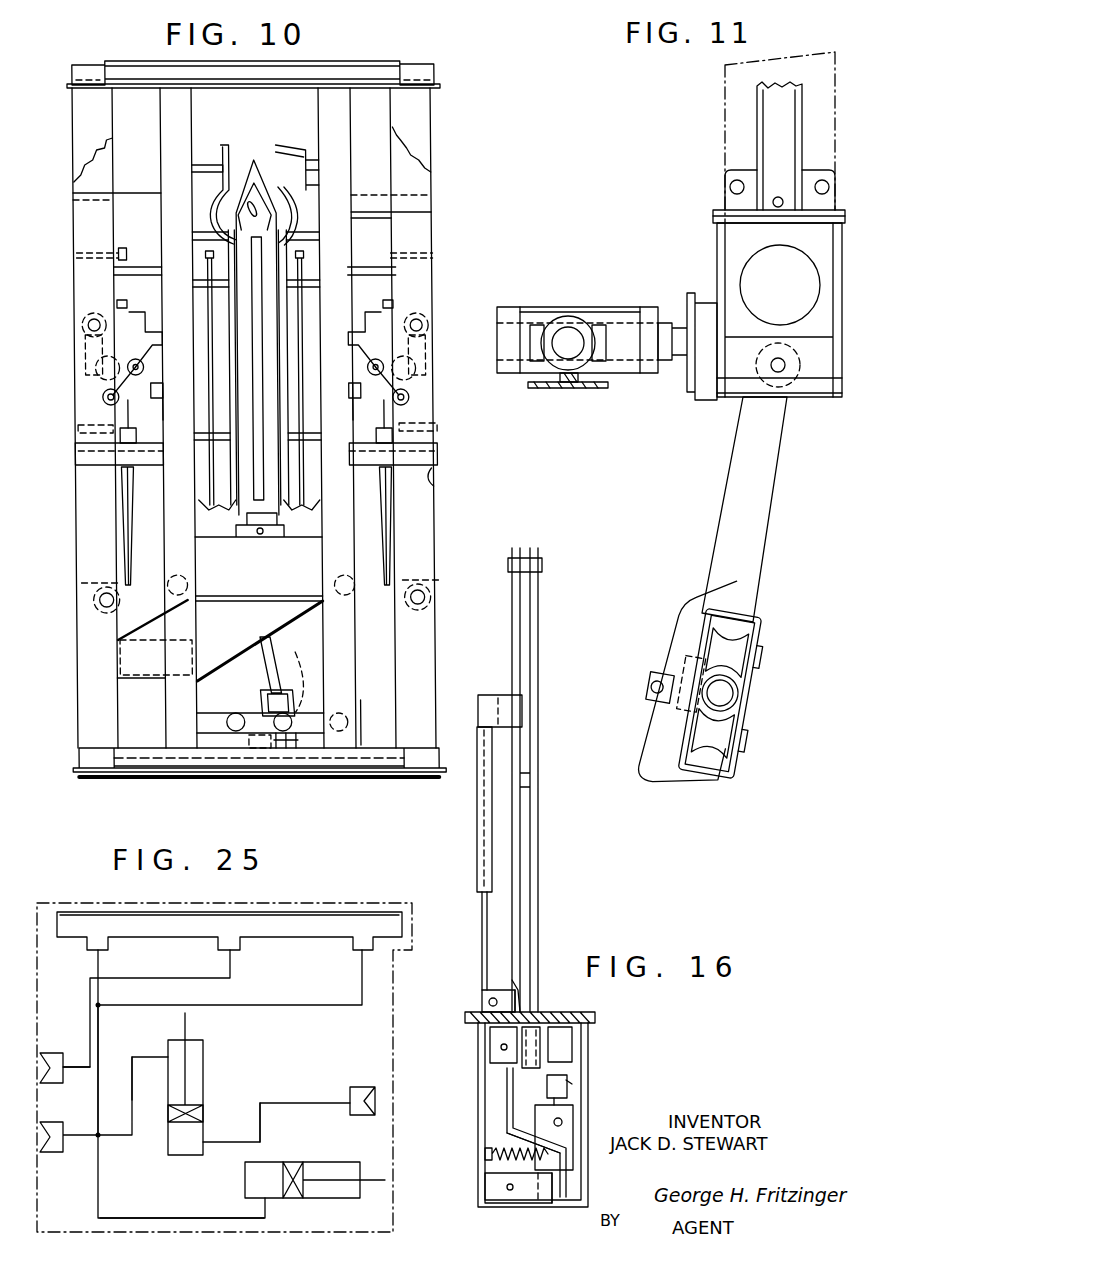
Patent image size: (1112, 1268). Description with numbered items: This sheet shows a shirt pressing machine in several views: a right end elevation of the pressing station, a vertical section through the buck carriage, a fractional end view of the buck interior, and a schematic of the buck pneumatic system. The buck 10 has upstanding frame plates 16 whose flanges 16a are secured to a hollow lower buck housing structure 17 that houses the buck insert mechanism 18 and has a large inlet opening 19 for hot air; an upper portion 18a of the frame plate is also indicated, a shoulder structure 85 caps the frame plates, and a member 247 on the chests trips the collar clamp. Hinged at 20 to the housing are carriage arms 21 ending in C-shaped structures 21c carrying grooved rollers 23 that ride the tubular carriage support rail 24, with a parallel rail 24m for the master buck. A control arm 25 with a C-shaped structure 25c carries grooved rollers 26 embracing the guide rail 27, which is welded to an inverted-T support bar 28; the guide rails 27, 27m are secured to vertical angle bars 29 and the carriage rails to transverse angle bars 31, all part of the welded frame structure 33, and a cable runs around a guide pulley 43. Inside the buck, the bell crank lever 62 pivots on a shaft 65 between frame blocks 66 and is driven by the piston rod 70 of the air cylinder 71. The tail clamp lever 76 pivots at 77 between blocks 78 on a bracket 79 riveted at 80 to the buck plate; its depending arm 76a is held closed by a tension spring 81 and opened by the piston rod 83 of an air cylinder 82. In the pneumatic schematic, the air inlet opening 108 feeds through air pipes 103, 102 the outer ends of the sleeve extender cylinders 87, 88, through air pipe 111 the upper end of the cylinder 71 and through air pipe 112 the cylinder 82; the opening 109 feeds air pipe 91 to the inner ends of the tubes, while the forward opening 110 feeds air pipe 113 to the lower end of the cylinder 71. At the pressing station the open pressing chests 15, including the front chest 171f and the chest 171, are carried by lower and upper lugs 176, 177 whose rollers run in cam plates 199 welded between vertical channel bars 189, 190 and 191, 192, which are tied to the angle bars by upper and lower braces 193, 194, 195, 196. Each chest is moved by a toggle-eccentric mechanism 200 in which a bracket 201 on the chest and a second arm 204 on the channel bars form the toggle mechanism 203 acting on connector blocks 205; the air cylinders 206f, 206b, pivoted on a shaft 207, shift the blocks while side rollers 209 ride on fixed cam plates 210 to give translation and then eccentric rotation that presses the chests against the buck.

In FIG. 11, the first buck 10 is at (722, 108).
In FIG. 10, the pressing chests 15 is at (195, 508).
In FIG. 11, the buck frame plates 16 is at (760, 108).
In FIG. 16, the buck frame plates 16 is at (540, 850).
In FIG. 11, the flanges 16a is at (716, 204).
In FIG. 11, the lower buck housing structure 17 is at (714, 258).
In FIG. 16, the lower buck housing structure 17 is at (592, 1092).
In FIG. 16, the buck insert mechanism 18 is at (478, 1098).
In FIG. 11, the ear bracket 18a is at (812, 168).
In FIG. 11, the inlet opening 19 is at (752, 312).
In FIG. 11, the hinge 20 is at (786, 364).
In FIG. 10, the carriage arms 21 is at (290, 635).
In FIG. 11, the carriage arms 21 is at (762, 524).
In FIG. 11, the C-shaped structures 21c is at (660, 738).
In FIG. 10, the grooved rollers 23 is at (280, 748).
In FIG. 11, the grooved rollers 23 is at (748, 656).
In FIG. 10, the carriage support rail 24 is at (242, 716).
In FIG. 11, the carriage support rail 24 is at (740, 696).
In FIG. 10, the second carriage support rail 24m is at (309, 674).
In FIG. 11, the control arm 25 is at (670, 366).
In FIG. 11, the C-shaped structure 25c is at (566, 306).
In FIG. 11, the grooved rollers 26 is at (558, 390).
In FIG. 10, the guide rail 27 is at (165, 592).
In FIG. 11, the guide rail 27 is at (556, 318).
In FIG. 10, the guide rail for master buck 27m is at (330, 584).
In FIG. 10, the support bar 28 is at (152, 616).
In FIG. 11, the support bar 28 is at (598, 390).
In FIG. 10, the vertical angle bars 29 is at (186, 556).
In FIG. 10, the transverse angle bars 31 is at (210, 745).
In FIG. 10, the welded frame structure 33 is at (72, 708).
In FIG. 10, the guide pulley 43 is at (252, 760).
In FIG. 16, the bell crank lever 62 is at (508, 1087).
In FIG. 16, the shaft 65 is at (596, 1032).
In FIG. 16, the frame blocks 66 is at (498, 1063).
In FIG. 16, the piston rod 70 is at (586, 1095).
In FIG. 16, the air cylinder 71 is at (568, 1134).
In FIG. 25, the air cylinder 71 is at (196, 1044).
In FIG. 16, the tail clamp lever 76 is at (476, 836).
In FIG. 16, the depending arm 76a is at (505, 1118).
In FIG. 16, the pivot 77 is at (480, 990).
In FIG. 16, the blocks 78 is at (496, 990).
In FIG. 16, the bracket 79 is at (478, 1010).
In FIG. 16, the rivets 80 is at (514, 970).
In FIG. 16, the tension spring 81 is at (508, 1158).
In FIG. 16, the air cylinder 82 is at (498, 1206).
In FIG. 25, the air cylinder 82 is at (318, 1200).
In FIG. 16, the piston rod 83 is at (550, 1200).
In FIG. 10, the shoulder structure 85 is at (242, 160).
In FIG. 25, the cylinder tube 87 is at (136, 918).
In FIG. 25, the cylinder tube 88 is at (344, 914).
In FIG. 25, the air pipe 91 is at (180, 986).
In FIG. 25, the air pipe 102 is at (328, 990).
In FIG. 25, the air pipe 103 is at (100, 1032).
In FIG. 25, the air inlet opening 108 is at (52, 1124).
In FIG. 25, the air inlet opening 109 is at (55, 1082).
In FIG. 11, the air inlet opening 110 is at (780, 210).
In FIG. 25, the air inlet opening 110 is at (348, 1118).
In FIG. 25, the air pipe 111 is at (134, 1102).
In FIG. 25, the air pipe 112 is at (174, 1204).
In FIG. 25, the air pipe 113 is at (274, 1104).
In FIG. 10, the pressing chest 171 is at (306, 170).
In FIG. 10, the front pressing chest 171f is at (195, 182).
In FIG. 10, the supporting lugs 176 is at (258, 401).
In FIG. 10, the upper lugs 177 is at (128, 276).
In FIG. 10, the vertical channel bar 189 is at (78, 150).
In FIG. 10, the vertical channel bar 190 is at (86, 190).
In FIG. 10, the vertical channel bar 191 is at (422, 140).
In FIG. 10, the vertical channel bar 192 is at (432, 428).
In FIG. 10, the upper brace 193 is at (128, 222).
In FIG. 10, the lower brace 194 is at (90, 458).
In FIG. 10, the upper brace 195 is at (430, 220).
In FIG. 10, the lower brace 196 is at (432, 486).
In FIG. 10, the cam plates 199 is at (86, 250).
In FIG. 10, the toggle-eccentric mechanisms 200 is at (143, 367).
In FIG. 10, the bracket 201 is at (152, 316).
In FIG. 10, the toggle mechanism 203 is at (100, 413).
In FIG. 10, the second arm 204 is at (257, 350).
In FIG. 10, the connector blocks 205 is at (118, 416).
In FIG. 10, the air cylinder 206b is at (388, 512).
In FIG. 10, the air cylinder 206f is at (120, 505).
In FIG. 10, the shaft 207 is at (88, 606).
In FIG. 10, the side rollers 209 is at (160, 390).
In FIG. 10, the cam plates 210 is at (108, 312).
In FIG. 10, the member 247 is at (226, 145).